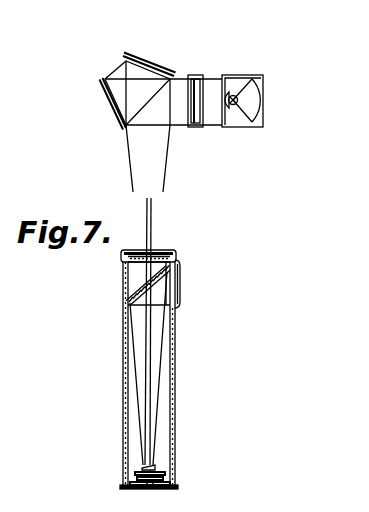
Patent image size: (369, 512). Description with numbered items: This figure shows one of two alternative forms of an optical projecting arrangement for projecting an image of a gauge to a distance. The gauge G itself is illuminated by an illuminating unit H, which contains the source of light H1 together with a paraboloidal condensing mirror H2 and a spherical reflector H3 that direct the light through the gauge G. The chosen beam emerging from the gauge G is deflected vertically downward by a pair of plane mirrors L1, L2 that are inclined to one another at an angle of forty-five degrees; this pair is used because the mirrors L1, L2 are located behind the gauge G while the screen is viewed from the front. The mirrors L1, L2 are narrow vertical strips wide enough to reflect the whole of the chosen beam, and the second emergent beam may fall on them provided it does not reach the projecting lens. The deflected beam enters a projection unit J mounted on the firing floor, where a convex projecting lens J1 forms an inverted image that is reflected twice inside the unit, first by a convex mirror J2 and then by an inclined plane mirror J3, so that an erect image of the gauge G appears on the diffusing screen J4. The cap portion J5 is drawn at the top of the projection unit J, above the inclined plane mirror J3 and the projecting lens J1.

The plane mirror L1 is at (107, 98).
The plane mirror L2 is at (140, 66).
The gauge G is at (200, 75).
The illuminating unit H is at (265, 83).
The source of light H1 is at (235, 96).
The paraboloidal condensing mirror H2 is at (262, 105).
The spherical reflector H3 is at (226, 107).
The projection unit J is at (124, 382).
The convex projecting lens J1 is at (132, 261).
The convex mirror J2 is at (152, 466).
The inclined plane mirror J3 is at (131, 300).
The diffusing screen J4 is at (176, 297).
The cap top plate J5 is at (165, 250).